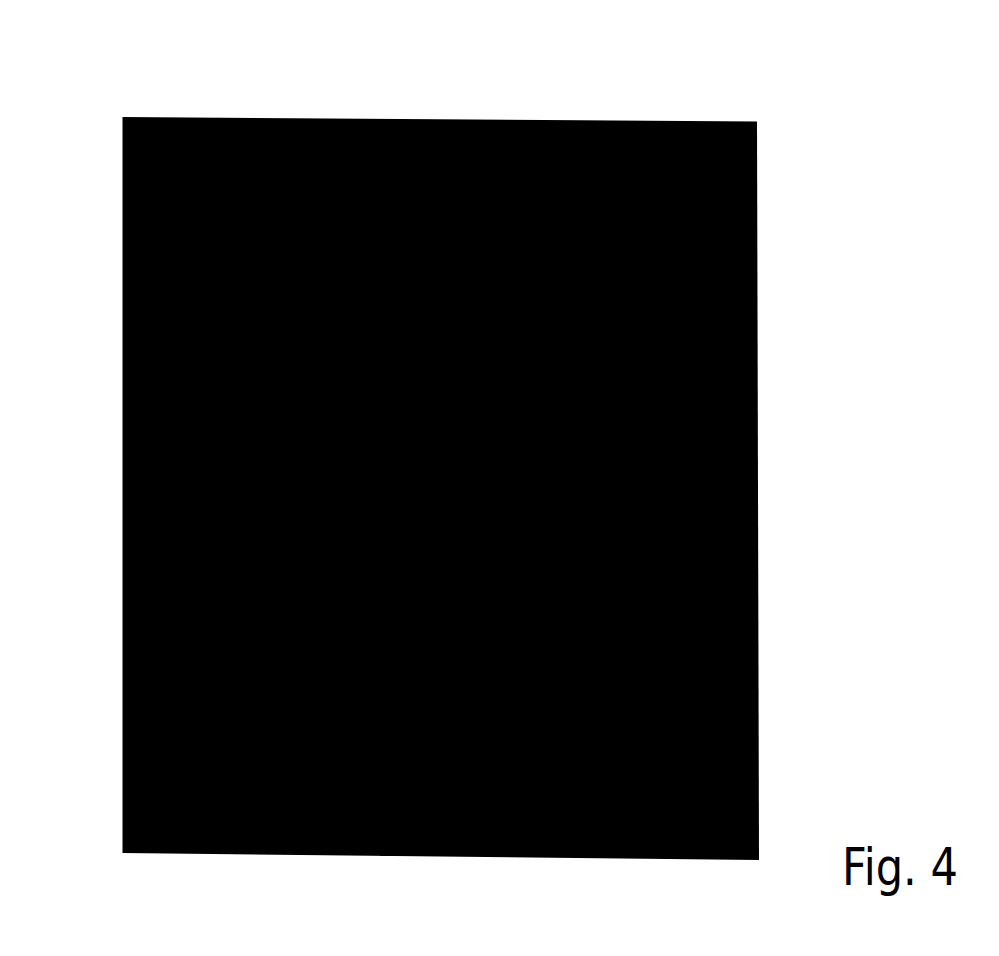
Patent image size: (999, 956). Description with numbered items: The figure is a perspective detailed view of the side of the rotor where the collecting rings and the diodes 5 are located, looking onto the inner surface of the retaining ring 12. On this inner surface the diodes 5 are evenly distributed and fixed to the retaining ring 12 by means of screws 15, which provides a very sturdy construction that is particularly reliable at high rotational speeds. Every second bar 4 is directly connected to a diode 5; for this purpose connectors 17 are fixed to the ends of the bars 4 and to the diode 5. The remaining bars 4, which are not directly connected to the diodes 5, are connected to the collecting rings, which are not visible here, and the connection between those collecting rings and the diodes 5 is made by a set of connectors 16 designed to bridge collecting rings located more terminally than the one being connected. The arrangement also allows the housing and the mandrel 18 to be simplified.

The bar 4 is at (755, 232).
The diode 5 is at (757, 483).
The retaining ring 12 is at (757, 664).
The screw 15 is at (753, 410).
The connector 16 is at (582, 121).
The connector 17 is at (757, 357).
The mandrel 18 is at (323, 120).